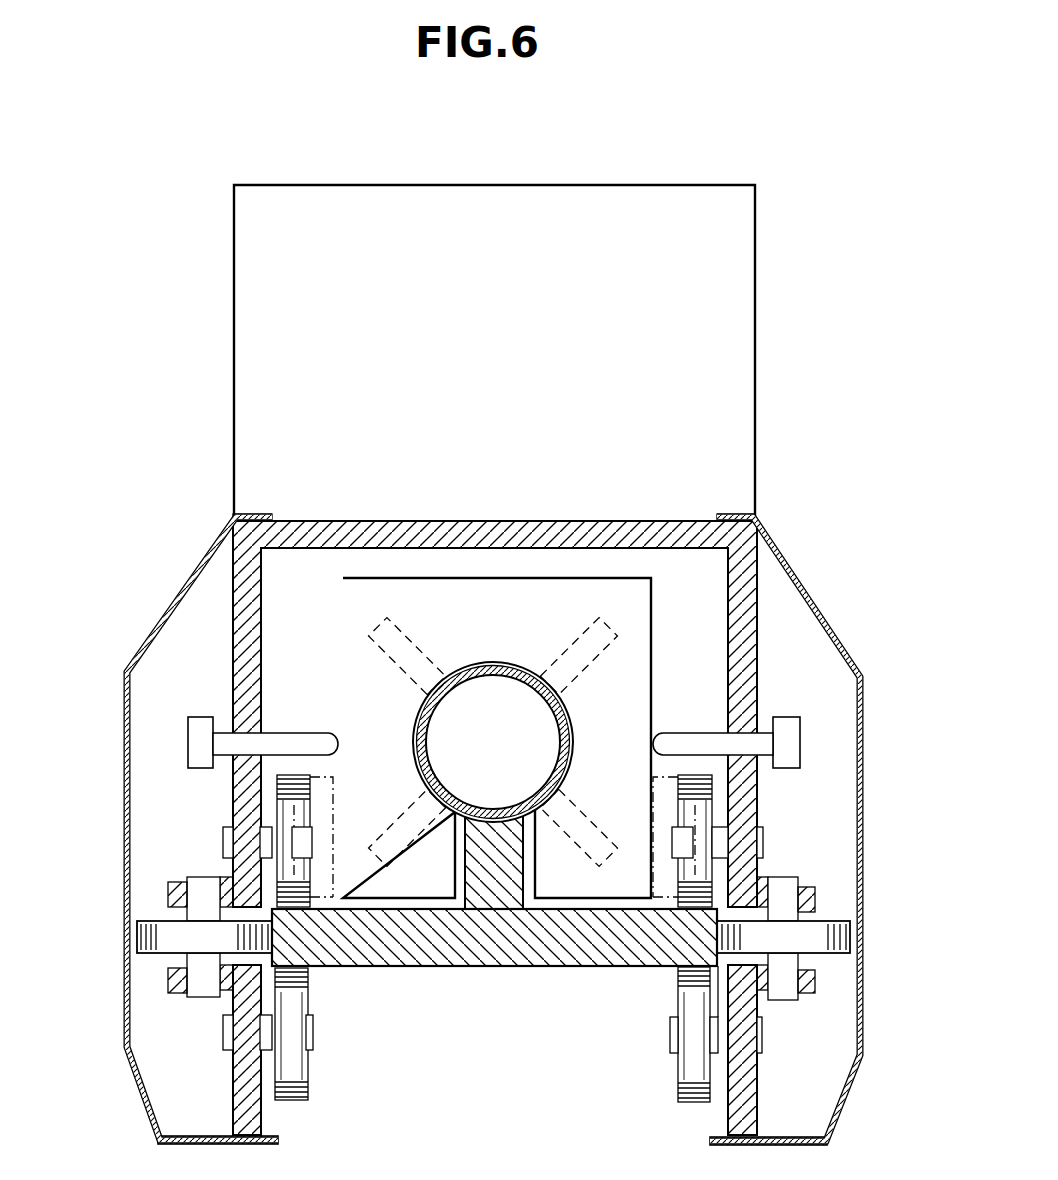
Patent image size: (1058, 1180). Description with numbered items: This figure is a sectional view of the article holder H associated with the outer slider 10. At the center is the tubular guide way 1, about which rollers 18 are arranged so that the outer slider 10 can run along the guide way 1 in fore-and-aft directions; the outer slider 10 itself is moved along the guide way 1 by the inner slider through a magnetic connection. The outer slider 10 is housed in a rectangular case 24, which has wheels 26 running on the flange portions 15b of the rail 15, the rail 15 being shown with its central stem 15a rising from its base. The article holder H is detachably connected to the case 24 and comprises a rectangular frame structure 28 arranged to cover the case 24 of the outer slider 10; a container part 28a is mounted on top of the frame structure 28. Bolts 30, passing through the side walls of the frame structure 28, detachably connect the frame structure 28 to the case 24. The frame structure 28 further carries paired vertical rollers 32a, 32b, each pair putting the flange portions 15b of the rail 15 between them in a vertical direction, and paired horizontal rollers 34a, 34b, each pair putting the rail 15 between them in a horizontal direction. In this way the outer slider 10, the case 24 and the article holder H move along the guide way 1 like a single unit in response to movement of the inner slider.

The tubular guide way 1 is at (473, 668).
The outer slider 10 is at (363, 650).
The rail 15 is at (540, 958).
The stem of base plate 15a is at (488, 860).
The flange portions 15b is at (300, 930).
The rollers 18 is at (607, 627).
The rectangular case 24 is at (343, 670).
The wheels 26 is at (323, 897).
The rectangular frame structure 28 is at (688, 523).
The container part 28a is at (562, 185).
The bolts 30 is at (198, 717).
The vertical rollers 32a is at (287, 808).
The vertical rollers 32b is at (307, 1075).
The horizontal rollers 34a is at (153, 930).
The horizontal rollers 34b is at (828, 925).
The article holder H is at (780, 514).